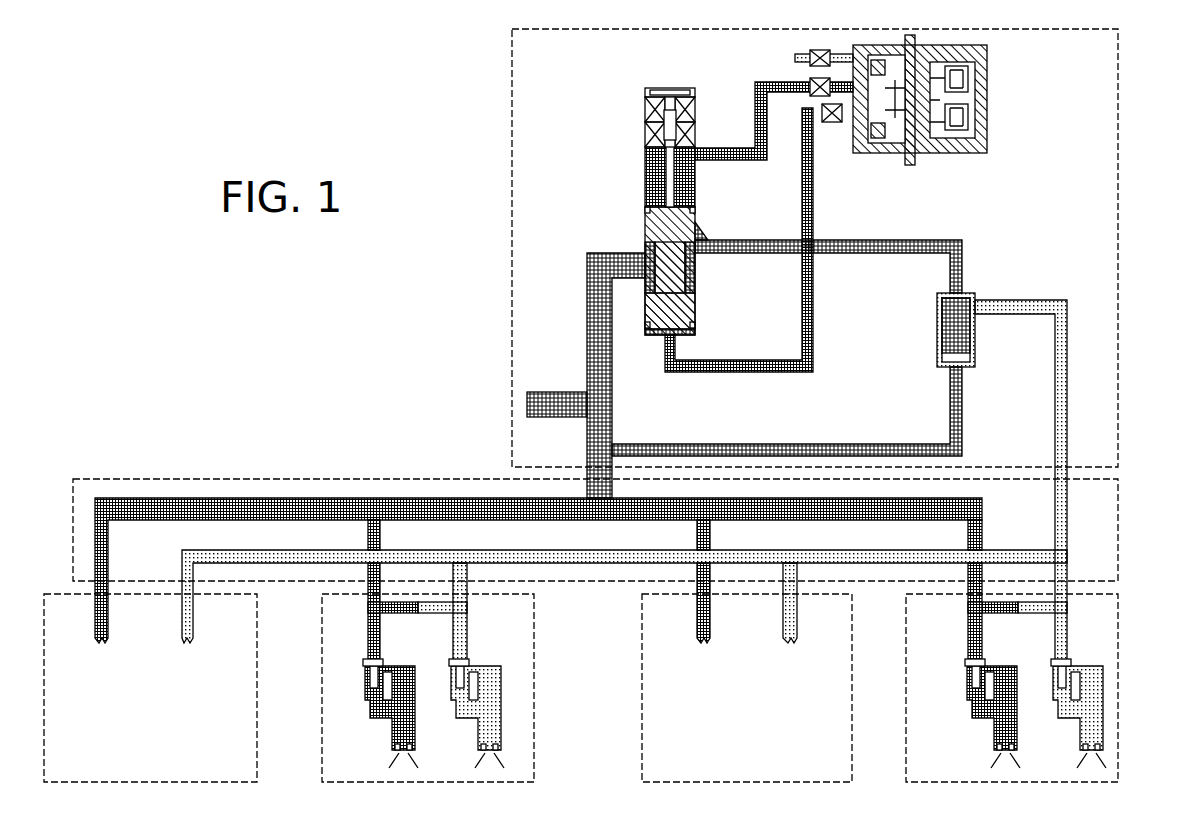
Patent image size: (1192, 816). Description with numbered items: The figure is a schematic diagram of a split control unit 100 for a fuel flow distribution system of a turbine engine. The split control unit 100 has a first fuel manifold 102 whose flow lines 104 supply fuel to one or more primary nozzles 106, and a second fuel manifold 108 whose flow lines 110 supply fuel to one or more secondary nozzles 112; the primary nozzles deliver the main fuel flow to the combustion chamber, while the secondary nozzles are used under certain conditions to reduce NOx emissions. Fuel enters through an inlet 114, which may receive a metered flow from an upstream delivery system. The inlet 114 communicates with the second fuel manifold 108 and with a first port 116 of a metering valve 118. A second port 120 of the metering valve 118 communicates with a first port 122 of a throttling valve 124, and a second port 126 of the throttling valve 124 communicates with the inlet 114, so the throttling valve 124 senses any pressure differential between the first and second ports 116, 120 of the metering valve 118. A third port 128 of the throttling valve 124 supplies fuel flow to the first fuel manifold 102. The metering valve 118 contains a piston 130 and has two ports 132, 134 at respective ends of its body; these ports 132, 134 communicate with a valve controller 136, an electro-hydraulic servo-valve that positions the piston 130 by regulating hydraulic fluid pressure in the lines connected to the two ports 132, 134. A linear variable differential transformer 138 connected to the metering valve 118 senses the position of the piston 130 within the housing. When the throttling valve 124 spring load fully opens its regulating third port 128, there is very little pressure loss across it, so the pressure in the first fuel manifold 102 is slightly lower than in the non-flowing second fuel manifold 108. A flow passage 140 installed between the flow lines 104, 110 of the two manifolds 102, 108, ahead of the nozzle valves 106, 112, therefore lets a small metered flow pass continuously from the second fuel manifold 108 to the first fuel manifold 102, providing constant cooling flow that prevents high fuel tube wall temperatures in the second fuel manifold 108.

The split control unit 100 is at (480, 247).
The first fuel manifold 102 is at (1090, 552).
The flow lines 104 is at (572, 565).
The primary nozzles 106 is at (500, 682).
The second fuel manifold 108 is at (247, 485).
The flow lines 110 is at (371, 497).
The secondary nozzles 112 is at (392, 726).
The inlet 114 is at (517, 403).
The first port 116 is at (670, 264).
The metering valve 118 is at (695, 306).
The second port 120 is at (730, 227).
The first port 122 is at (985, 281).
The throttling valve 124 is at (937, 330).
The second port 126 is at (972, 378).
The third port 128 is at (985, 322).
The piston 130 is at (672, 284).
The port 132 is at (655, 345).
The port 134 is at (712, 137).
The valve controller 136 is at (987, 100).
The linear variable differential transformer (LVDT) 138 is at (671, 88).
The flow passage 140 is at (395, 614).